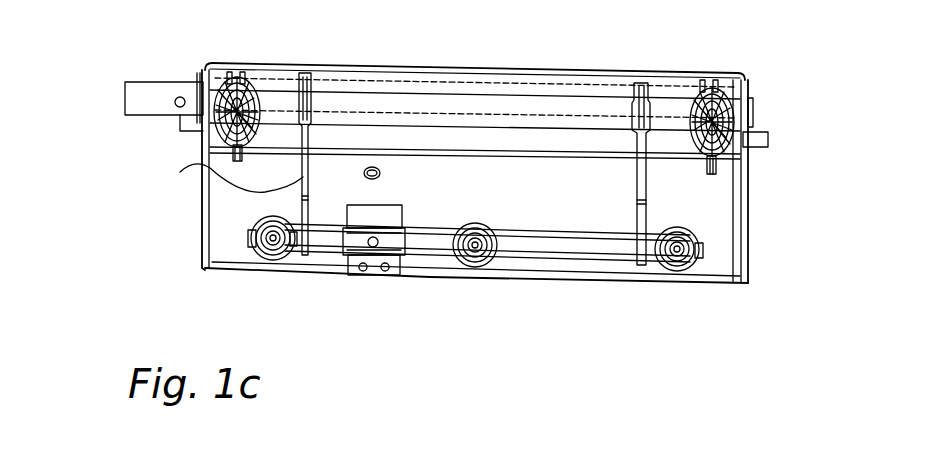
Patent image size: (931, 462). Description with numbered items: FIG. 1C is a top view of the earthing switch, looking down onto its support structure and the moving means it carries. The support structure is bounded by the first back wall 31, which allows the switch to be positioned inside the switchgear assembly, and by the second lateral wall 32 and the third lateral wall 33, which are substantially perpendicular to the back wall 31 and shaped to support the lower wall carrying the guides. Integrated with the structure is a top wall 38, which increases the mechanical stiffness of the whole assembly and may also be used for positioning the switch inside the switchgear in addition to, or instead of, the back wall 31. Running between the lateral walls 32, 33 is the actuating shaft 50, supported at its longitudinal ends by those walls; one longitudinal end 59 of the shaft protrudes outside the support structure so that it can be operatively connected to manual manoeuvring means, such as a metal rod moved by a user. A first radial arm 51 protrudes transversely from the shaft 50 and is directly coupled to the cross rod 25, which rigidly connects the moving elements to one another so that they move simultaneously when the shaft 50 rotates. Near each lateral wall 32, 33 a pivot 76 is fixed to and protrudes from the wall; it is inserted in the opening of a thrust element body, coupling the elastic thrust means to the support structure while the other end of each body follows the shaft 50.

The cross rod 25 is at (530, 248).
The first back wall 31 is at (560, 70).
The second lateral wall 32 is at (200, 223).
The third lateral wall 33 is at (753, 238).
The top wall 38 is at (402, 105).
The actuating shaft 50 is at (757, 115).
The first radial arm 51 is at (220, 175).
The longitudinal end of the actuating shaft 59 is at (142, 98).
The pivot 76 is at (765, 141).